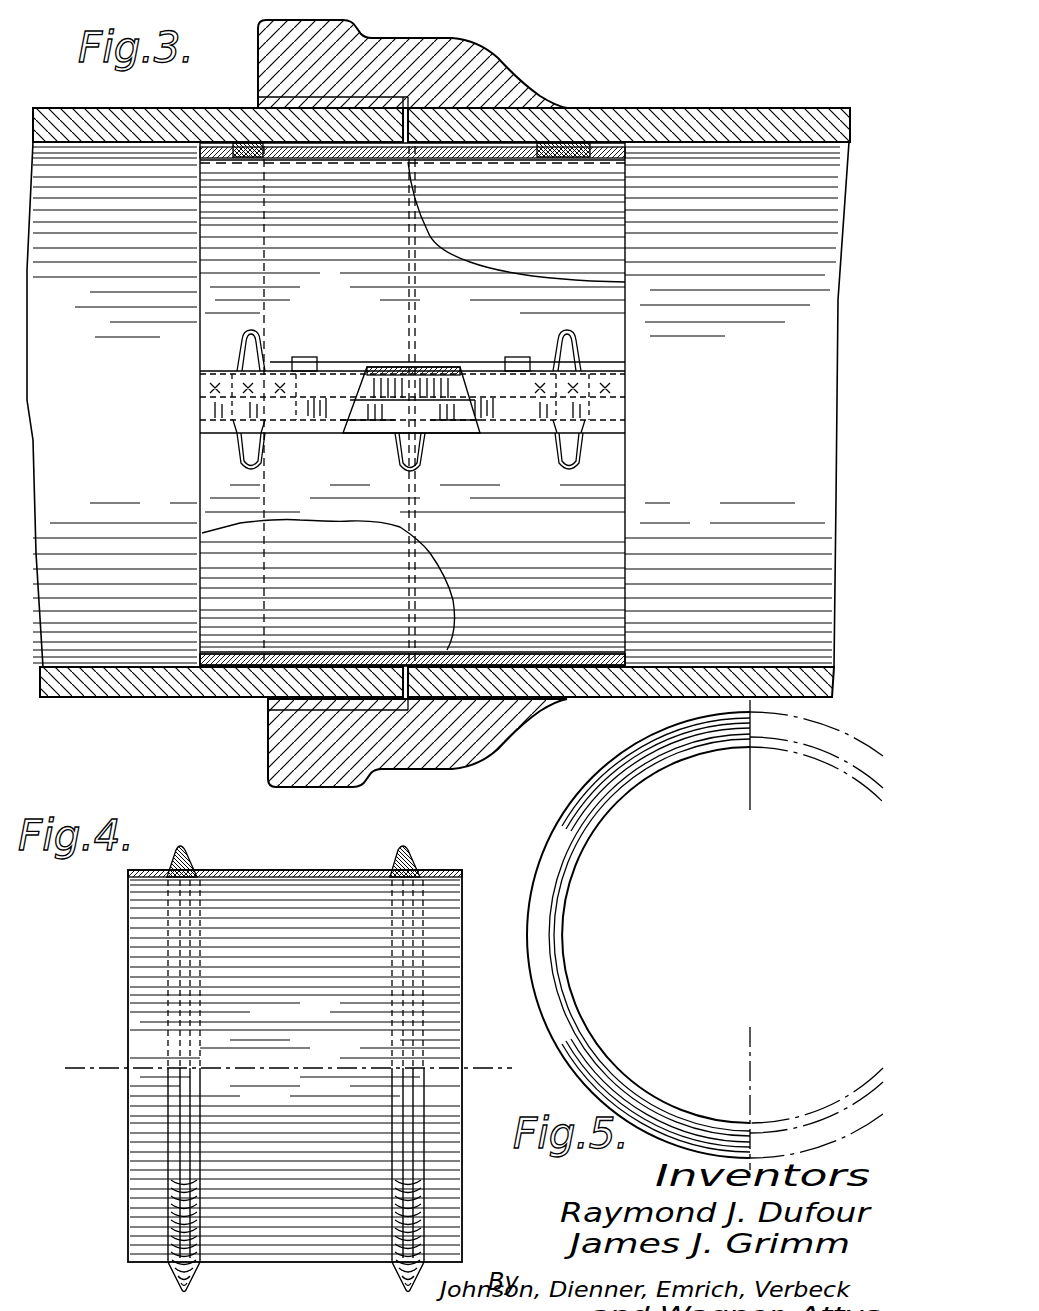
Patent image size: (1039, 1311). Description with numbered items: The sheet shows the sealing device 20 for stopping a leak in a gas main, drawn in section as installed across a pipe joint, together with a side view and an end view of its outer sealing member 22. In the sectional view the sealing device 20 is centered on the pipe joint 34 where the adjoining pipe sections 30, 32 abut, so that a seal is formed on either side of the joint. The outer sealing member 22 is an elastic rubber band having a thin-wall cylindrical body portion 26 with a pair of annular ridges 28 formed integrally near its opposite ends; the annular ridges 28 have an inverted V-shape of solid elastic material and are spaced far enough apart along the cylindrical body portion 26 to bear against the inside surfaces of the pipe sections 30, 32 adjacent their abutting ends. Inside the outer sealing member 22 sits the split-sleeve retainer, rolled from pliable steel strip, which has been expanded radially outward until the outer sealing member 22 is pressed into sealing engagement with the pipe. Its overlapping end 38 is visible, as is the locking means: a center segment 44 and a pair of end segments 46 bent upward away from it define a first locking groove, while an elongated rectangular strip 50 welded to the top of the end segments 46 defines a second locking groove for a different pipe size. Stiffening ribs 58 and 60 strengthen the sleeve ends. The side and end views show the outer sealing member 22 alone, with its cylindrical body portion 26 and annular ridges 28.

In FIG. 3, the sealing device 20 is at (217, 665).
In FIG. 3, the outer sealing member 22 is at (604, 670).
In FIG. 4, the outer sealing member 22 is at (130, 1120).
In FIG. 5, the outer sealing member 22 is at (575, 1074).
In FIG. 3, the cylindrical body portion 26 is at (663, 110).
In FIG. 4, the cylindrical body portion 26 is at (455, 893).
In FIG. 5, the cylindrical body portion 26 is at (560, 968).
In FIG. 3, the annular ridges 28 is at (246, 143).
In FIG. 4, the annular ridges 28 is at (190, 863).
In FIG. 5, the annular ridges 28 is at (585, 808).
In FIG. 3, the pipe section 30 is at (720, 110).
In FIG. 3, the pipe section 32 is at (118, 124).
In FIG. 3, the pipe joint 34 is at (423, 60).
In FIG. 3, the end of split sleeve 38 is at (213, 349).
In FIG. 3, the center segment 44 is at (492, 390).
In FIG. 3, the end segments 46 is at (205, 400).
In FIG. 3, the elongated rectangular strip 50 is at (615, 418).
In FIG. 3, the stiffening ribs 58 is at (265, 454).
In FIG. 3, the stiffening ribs 60 is at (268, 350).